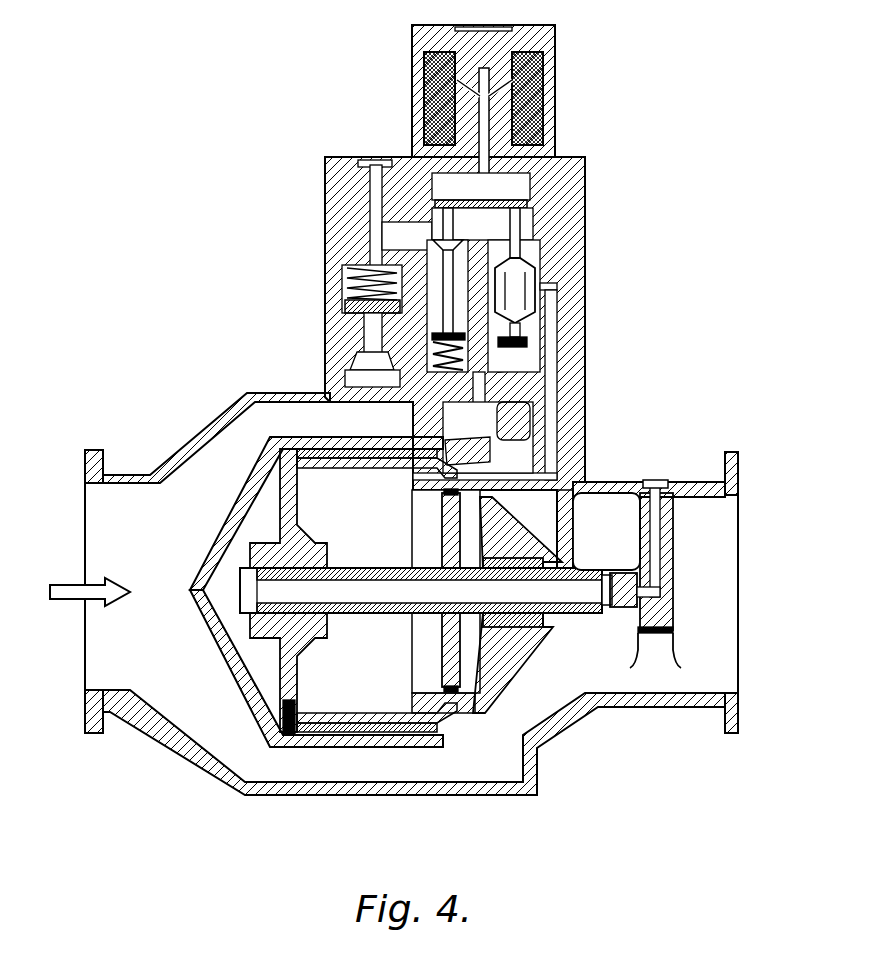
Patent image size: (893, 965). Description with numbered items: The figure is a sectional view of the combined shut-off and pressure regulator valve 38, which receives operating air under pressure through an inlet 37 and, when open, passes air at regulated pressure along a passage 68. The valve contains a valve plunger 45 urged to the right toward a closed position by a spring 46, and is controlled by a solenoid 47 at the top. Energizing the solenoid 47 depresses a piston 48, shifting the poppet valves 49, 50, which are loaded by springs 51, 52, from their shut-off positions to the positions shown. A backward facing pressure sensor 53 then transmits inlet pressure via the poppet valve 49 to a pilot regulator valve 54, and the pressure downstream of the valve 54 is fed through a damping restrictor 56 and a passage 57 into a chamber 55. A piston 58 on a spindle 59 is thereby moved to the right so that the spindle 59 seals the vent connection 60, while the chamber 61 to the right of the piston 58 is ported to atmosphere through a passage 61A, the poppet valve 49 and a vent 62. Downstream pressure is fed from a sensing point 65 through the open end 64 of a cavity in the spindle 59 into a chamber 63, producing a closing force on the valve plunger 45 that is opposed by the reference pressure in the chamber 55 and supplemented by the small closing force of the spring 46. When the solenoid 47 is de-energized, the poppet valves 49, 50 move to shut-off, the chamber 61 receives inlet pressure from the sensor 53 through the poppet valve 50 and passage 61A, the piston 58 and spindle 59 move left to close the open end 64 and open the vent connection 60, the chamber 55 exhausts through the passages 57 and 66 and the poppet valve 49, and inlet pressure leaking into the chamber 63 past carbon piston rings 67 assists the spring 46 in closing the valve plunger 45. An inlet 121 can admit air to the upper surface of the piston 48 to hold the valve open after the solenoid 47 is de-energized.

The inlet 37 is at (117, 683).
The combined shut-off and pressure regulator valve 38 is at (312, 815).
The valve plunger 45 is at (282, 682).
The spring 46 is at (282, 722).
The solenoid 47 is at (540, 72).
The piston 48 is at (464, 290).
The poppet valve 49 is at (444, 262).
The poppet valve 50 is at (535, 282).
The spring 51 is at (392, 350).
The spring 52 is at (527, 360).
The backward facing pressure sensor 53 is at (488, 437).
The pilot regulator valve 54 is at (372, 371).
The chamber 55 is at (318, 483).
The damping restrictor 56 is at (421, 401).
The passage 57 is at (548, 410).
The piston 58 is at (450, 534).
The spindle 59 is at (566, 612).
The vent connection 60 is at (656, 546).
The chamber 61 is at (485, 664).
The passage 61A is at (566, 420).
The vent 62 is at (375, 180).
The chamber 63 is at (262, 498).
The open end 64 is at (252, 590).
The sensing point 65 is at (610, 570).
The passage 66 is at (430, 352).
The carbon piston rings 67 is at (360, 727).
The passage 68 is at (714, 703).
The inlet 121 is at (575, 190).